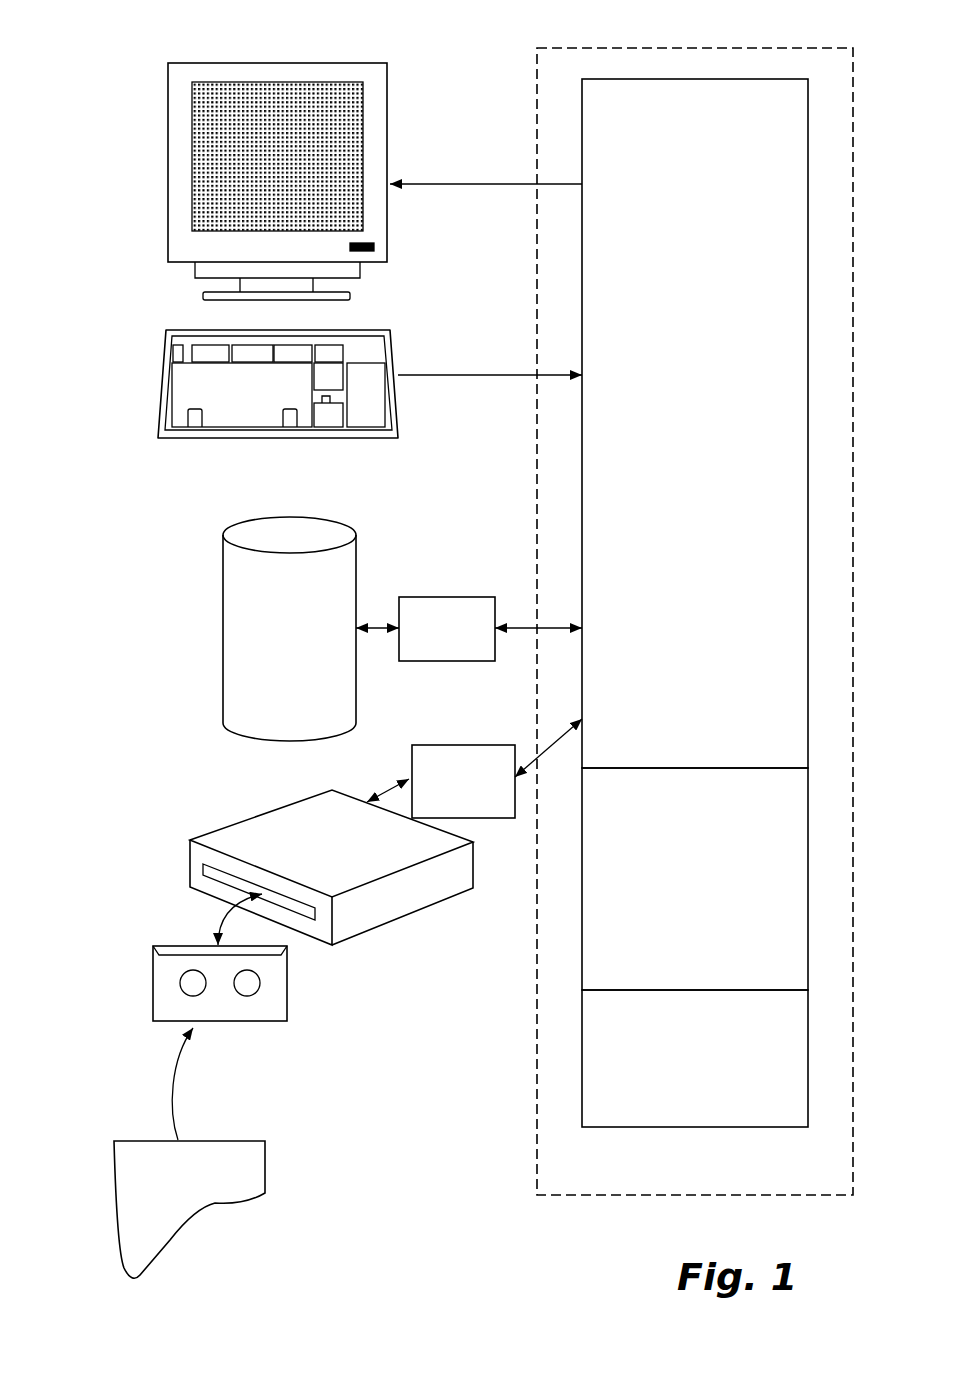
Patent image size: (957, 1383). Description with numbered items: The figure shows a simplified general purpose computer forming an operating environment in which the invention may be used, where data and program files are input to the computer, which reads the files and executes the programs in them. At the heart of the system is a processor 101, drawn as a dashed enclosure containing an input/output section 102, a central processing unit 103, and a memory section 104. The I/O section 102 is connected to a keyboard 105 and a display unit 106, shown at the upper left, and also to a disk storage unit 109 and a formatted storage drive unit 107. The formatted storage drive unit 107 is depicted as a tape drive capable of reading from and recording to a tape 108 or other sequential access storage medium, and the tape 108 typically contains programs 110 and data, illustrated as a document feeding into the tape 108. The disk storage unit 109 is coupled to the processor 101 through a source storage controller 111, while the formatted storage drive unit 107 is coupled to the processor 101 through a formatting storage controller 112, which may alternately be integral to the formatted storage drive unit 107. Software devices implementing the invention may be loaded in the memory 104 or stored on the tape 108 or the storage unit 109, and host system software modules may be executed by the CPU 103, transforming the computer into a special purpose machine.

The processor 101 is at (630, 48).
The input/output section 102 is at (711, 97).
The central processing unit 103 is at (590, 953).
The memory section 104 is at (590, 1063).
The keyboard 105 is at (163, 362).
The display unit 106 is at (167, 168).
The formatted storage drive unit 107 is at (312, 838).
The tape 108 is at (153, 980).
The disk storage unit 109 is at (223, 583).
The programs 110 is at (132, 1141).
The source storage controller 111 is at (463, 597).
The formatting storage controller 112 is at (500, 745).